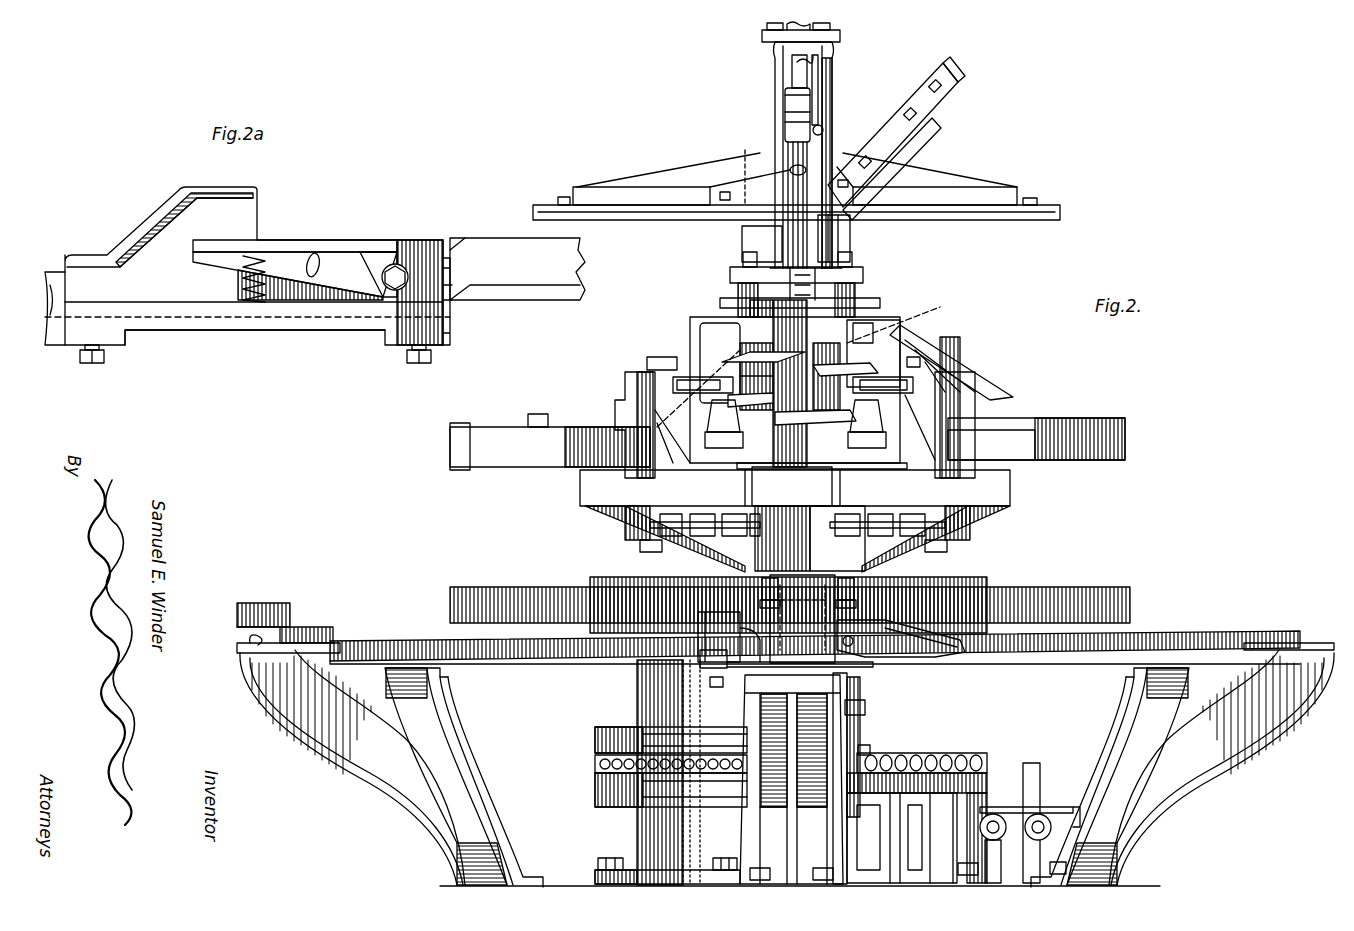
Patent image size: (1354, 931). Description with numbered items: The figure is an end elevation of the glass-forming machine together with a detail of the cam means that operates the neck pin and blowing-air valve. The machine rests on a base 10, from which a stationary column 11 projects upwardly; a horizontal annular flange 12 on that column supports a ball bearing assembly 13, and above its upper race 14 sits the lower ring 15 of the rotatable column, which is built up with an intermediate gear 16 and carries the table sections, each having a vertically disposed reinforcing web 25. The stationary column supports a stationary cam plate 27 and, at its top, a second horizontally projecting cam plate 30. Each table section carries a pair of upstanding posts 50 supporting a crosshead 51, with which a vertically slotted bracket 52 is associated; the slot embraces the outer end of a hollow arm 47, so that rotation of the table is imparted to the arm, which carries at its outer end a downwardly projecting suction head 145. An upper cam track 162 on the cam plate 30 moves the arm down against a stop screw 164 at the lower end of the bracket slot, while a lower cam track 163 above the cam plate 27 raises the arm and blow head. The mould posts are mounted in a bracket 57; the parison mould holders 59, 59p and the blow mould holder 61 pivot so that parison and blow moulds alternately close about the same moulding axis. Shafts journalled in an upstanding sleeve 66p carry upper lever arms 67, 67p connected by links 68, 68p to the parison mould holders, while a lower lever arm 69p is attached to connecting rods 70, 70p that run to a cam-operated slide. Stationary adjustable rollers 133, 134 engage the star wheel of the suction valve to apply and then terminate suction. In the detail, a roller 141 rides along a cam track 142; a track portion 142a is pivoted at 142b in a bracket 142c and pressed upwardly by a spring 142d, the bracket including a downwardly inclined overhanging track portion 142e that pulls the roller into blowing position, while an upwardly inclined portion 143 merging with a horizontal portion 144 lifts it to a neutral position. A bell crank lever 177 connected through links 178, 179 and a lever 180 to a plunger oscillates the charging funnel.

In FIG. 2, the base 10 is at (570, 865).
In FIG. 2, the stationary column 11 is at (652, 832).
In FIG. 2, the horizontal annular flange 12 is at (597, 790).
In FIG. 2, the ball bearing assembly 13 is at (597, 765).
In FIG. 2, the upper race 14 is at (597, 745).
In FIG. 2, the lower ring 15 is at (640, 698).
In FIG. 2, the intermediate gear 16 is at (1085, 592).
In FIG. 2, the reinforcing web 25 is at (1000, 488).
In FIG. 2, the stationary cam plate 27 is at (1022, 420).
In FIG. 2, the cam plate 30 is at (912, 180).
In FIG. 2, the arm 47 is at (797, 182).
In FIG. 2, the posts 50 is at (736, 290).
In FIG. 2, the crosshead 51 is at (865, 272).
In FIG. 2, the bracket 52 is at (778, 66).
In FIG. 2, the bracket 57 is at (820, 468).
In FIG. 2, the parison mould holder 59 is at (735, 352).
In FIG. 2, the parison mould holder 59p is at (880, 345).
In FIG. 2, the blow mould holder 61 is at (725, 310).
In FIG. 2, the upstanding sleeve 66p is at (945, 440).
In FIG. 2, the lever arm 67 is at (630, 385).
In FIG. 2, the lever arm 67p is at (975, 385).
In FIG. 2, the link 68 is at (700, 372).
In FIG. 2, the link 68p is at (880, 370).
In FIG. 2, the lever arm 69p is at (648, 555).
In FIG. 2, the connecting rod 70 is at (760, 540).
In FIG. 2, the connecting rod 70p is at (870, 520).
In FIG. 2, the roller 133 is at (848, 578).
In FIG. 2, the roller 134 is at (775, 575).
In FIG. 2A, the roller 141 is at (100, 295).
In FIG. 2, the cam track 142 is at (1080, 650).
In FIG. 2A, the track portion 142a is at (360, 228).
In FIG. 2, the track portion 142a is at (935, 630).
In FIG. 2A, the pivot 142b is at (385, 300).
In FIG. 2A, the bracket 142c is at (200, 305).
In FIG. 2A, the spring 142d is at (268, 290).
In FIG. 2A, the overhanging track portion 142e is at (140, 192).
In FIG. 2, the overhanging track portion 142e is at (735, 672).
In FIG. 2, the upwardly inclined portion 143 is at (318, 632).
In FIG. 2, the horizontal portion 144 is at (246, 660).
In FIG. 2, the suction head 145 is at (792, 110).
In FIG. 2, the upper cam track 162 is at (955, 88).
In FIG. 2, the lower cam track 163 is at (965, 352).
In FIG. 2, the stop screw 164 is at (795, 255).
In FIG. 2, the bell crank lever 177 is at (845, 722).
In FIG. 2, the link 178 is at (862, 750).
In FIG. 2, the link 179 is at (968, 820).
In FIG. 2, the lever 180 is at (826, 805).